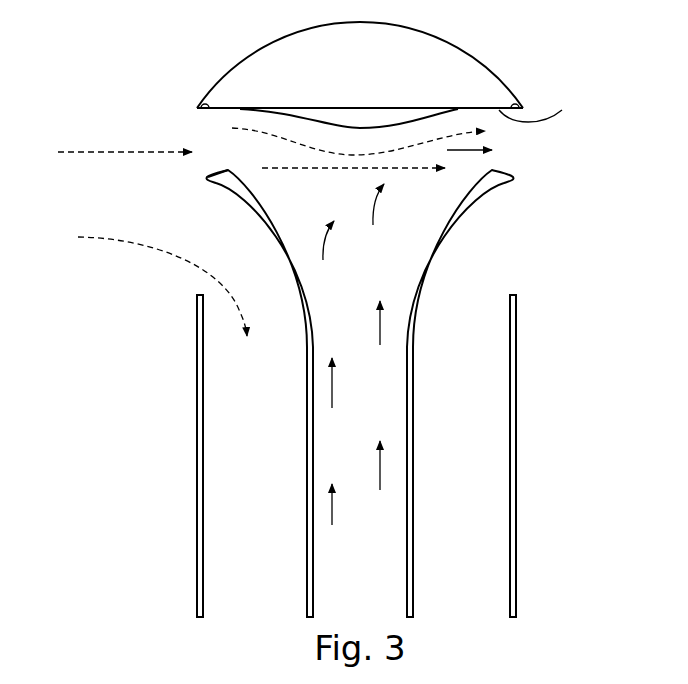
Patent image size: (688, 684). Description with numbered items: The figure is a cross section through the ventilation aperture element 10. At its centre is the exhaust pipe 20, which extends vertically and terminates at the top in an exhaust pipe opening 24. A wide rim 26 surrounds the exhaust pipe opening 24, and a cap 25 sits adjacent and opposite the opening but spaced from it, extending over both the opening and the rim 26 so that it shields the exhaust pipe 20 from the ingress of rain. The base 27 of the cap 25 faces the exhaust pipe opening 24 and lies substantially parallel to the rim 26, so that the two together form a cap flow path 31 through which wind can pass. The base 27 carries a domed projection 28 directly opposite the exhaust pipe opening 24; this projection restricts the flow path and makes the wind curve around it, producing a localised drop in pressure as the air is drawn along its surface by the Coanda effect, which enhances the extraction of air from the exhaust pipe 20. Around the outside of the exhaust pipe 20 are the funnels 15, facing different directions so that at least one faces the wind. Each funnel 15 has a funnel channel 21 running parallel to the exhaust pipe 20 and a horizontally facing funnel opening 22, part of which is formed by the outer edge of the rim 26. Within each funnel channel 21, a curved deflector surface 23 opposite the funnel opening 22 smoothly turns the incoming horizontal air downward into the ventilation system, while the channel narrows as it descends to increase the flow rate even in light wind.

The ventilation aperture element 10 is at (104, 54).
The funnel 15 is at (505, 242).
The exhaust pipe 20 is at (350, 257).
The funnel channel 21 is at (203, 453).
The funnel opening 22 is at (186, 268).
The curved deflector surface 23 is at (262, 220).
The exhaust pipe opening 24 is at (417, 196).
The cap 25 is at (438, 68).
The rim 26 is at (222, 169).
The base 27 is at (542, 103).
The domed projection 28 is at (343, 121).
The cap flow path 31 is at (194, 129).